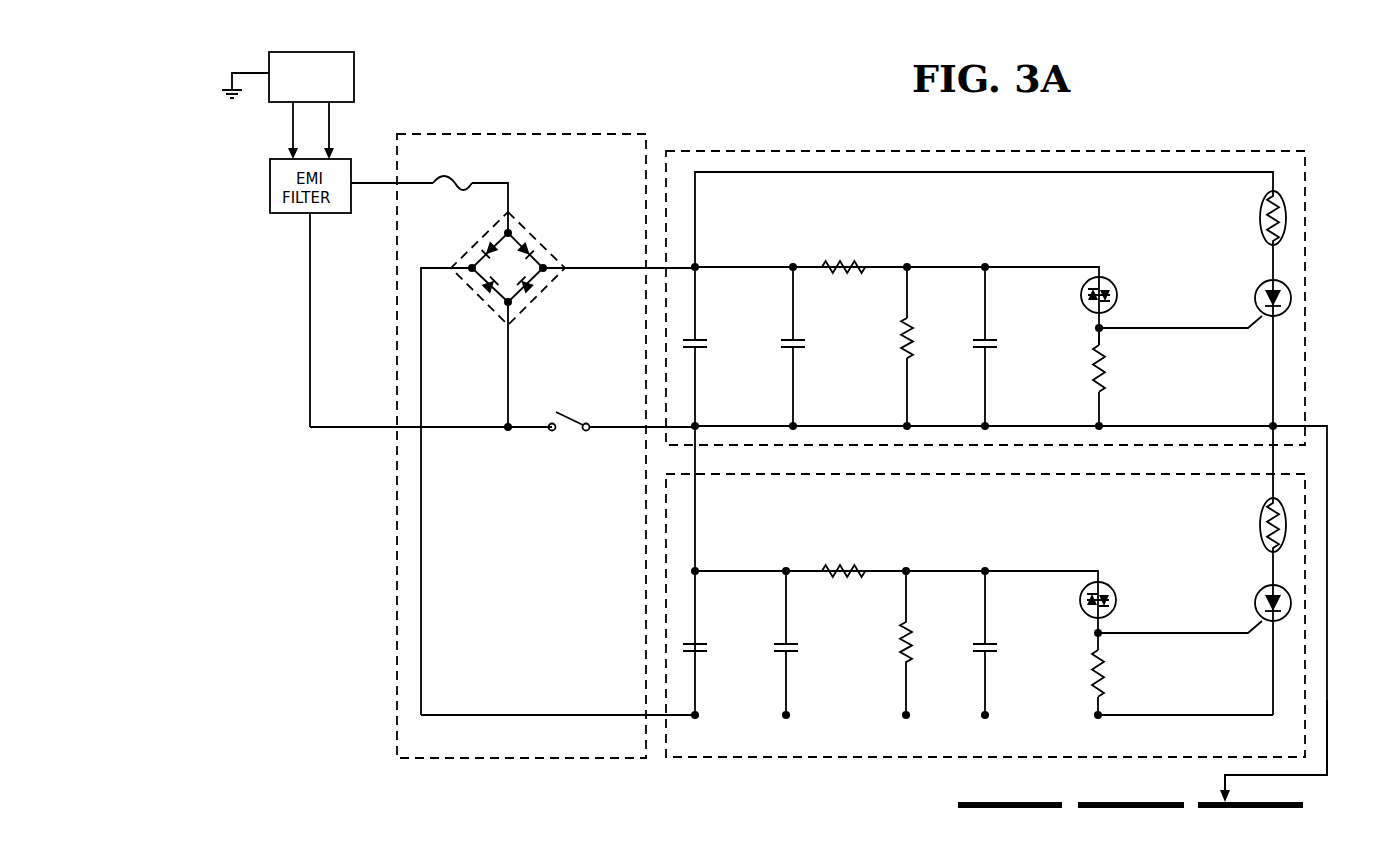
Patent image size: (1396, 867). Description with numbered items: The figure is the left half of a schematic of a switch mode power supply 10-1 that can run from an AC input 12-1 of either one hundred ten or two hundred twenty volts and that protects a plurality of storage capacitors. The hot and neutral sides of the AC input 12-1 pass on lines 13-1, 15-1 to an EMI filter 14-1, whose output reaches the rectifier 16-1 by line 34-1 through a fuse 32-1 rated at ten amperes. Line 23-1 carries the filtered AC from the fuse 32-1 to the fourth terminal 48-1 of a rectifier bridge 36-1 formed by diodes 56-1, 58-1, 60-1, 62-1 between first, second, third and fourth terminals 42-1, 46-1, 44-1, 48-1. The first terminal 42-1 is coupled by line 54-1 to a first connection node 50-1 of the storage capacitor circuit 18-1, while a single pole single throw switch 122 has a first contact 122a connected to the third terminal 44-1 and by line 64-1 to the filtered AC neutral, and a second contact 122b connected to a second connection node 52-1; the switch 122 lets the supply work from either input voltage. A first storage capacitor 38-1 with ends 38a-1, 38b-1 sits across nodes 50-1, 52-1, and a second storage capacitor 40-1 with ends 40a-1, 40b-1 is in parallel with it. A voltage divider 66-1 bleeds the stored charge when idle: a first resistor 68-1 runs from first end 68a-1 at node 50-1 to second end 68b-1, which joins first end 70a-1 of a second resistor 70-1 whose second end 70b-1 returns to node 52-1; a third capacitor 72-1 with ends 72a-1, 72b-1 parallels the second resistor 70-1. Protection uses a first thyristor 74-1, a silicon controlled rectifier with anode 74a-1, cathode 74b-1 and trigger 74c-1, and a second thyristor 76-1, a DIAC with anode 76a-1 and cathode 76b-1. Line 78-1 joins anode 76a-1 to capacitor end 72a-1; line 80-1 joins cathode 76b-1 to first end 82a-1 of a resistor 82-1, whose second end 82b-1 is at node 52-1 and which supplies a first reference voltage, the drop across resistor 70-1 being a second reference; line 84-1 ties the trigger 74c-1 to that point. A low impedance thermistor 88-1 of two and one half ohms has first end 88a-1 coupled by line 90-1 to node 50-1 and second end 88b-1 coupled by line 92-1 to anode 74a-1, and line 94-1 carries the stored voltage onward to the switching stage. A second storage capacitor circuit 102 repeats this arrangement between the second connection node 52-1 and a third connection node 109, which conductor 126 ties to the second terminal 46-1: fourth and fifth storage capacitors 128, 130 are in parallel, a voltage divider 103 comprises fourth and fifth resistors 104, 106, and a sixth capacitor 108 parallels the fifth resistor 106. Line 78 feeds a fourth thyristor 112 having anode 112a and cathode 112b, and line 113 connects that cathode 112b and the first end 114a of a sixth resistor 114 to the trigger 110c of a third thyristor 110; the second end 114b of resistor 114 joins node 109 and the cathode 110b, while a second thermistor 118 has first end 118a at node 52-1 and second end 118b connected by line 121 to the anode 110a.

The switch mode power supply 10-1 is at (532, 117).
The AC input 12-1 is at (357, 63).
The line 13-1 is at (293, 128).
The line 15-1 is at (330, 128).
The EMI filter 14-1 is at (298, 215).
The rectifier 16-1 is at (397, 595).
The storage capacitor circuit 18-1 is at (776, 150).
The line 23-1 is at (510, 183).
The fuse 32-1 is at (485, 190).
The line 34-1 is at (382, 185).
The rectifier bridge 36-1 is at (509, 274).
The first terminal 42-1 is at (548, 267).
The third terminal 44-1 is at (508, 305).
The second terminal 46-1 is at (470, 265).
The fourth terminal 48-1 is at (514, 233).
The first connection node 50-1 is at (700, 265).
The second connection node 52-1 is at (700, 432).
The line 54-1 is at (613, 268).
The diode 56-1 is at (532, 255).
The diode 58-1 is at (528, 285).
The diode 60-1 is at (488, 285).
The diode 62-1 is at (490, 250).
The line 64-1 is at (360, 428).
The voltage divider 66-1 is at (930, 290).
The first resistor 68-1 is at (838, 258).
The first end 68a-1 is at (807, 258).
The second end 68b-1 is at (887, 264).
The second resistor 70-1 is at (937, 346).
The first end 70a-1 is at (912, 312).
The second end 70b-1 is at (912, 392).
The third capacitor 72-1 is at (1015, 346).
The first end 72a-1 is at (990, 305).
The second end 72b-1 is at (990, 388).
The first thyristor 74-1 is at (1279, 355).
The anode 74a-1 is at (1285, 285).
The cathode 74b-1 is at (1282, 313).
The trigger 74c-1 is at (1256, 296).
The second thyristor 76-1 is at (1130, 284).
The anode 76a-1 is at (1104, 279).
The cathode 76b-1 is at (1105, 305).
The line 78-1 is at (1048, 266).
The line 80-1 is at (1093, 327).
The resistor 82-1 is at (1107, 379).
The first end 82a-1 is at (1103, 345).
The second end 82b-1 is at (1103, 398).
The line 84-1 is at (1192, 328).
The thermistor 88-1 is at (1279, 224).
The first end 88a-1 is at (1266, 193).
The second end 88b-1 is at (1265, 245).
The line 90-1 is at (1068, 173).
The line 92-1 is at (1278, 262).
The line 94-1 is at (1225, 777).
The first storage capacitor 38-1 is at (722, 346).
The first end 38a-1 is at (699, 306).
The second end 38b-1 is at (700, 385).
The second storage capacitor 40-1 is at (821, 346).
The first end 40a-1 is at (797, 306).
The second end 40b-1 is at (798, 385).
The second storage capacitor circuit 102 is at (795, 758).
The voltage divider 103 is at (882, 570).
The fourth resistor 104 is at (826, 564).
The fifth resistor 106 is at (905, 635).
The sixth capacitor 108 is at (980, 682).
The third connection node 109 is at (700, 720).
The third thyristor 110 is at (1241, 650).
The anode 110a is at (1290, 590).
The cathode 110b is at (1282, 618).
The trigger 110c is at (1256, 603).
The fourth thyristor 112 is at (1092, 604).
The anode 112a is at (1090, 612).
The cathode 112b is at (1090, 589).
The line 113 is at (1190, 634).
The sixth resistor 114 is at (1096, 674).
The first end 114a is at (1105, 648).
The second end 114b is at (1064, 701).
The second thermistor 118 is at (1290, 497).
The first end 118a is at (1268, 502).
The second end 118b is at (1268, 552).
The line 121 is at (1278, 568).
The single pole single throw switch 122 is at (596, 417).
The first contact 122a is at (550, 432).
The second contact 122b is at (572, 378).
The conductor 126 is at (562, 714).
The fourth storage capacitor 128 is at (700, 655).
The fifth storage capacitor 130 is at (790, 655).
The line 78 is at (1022, 570).